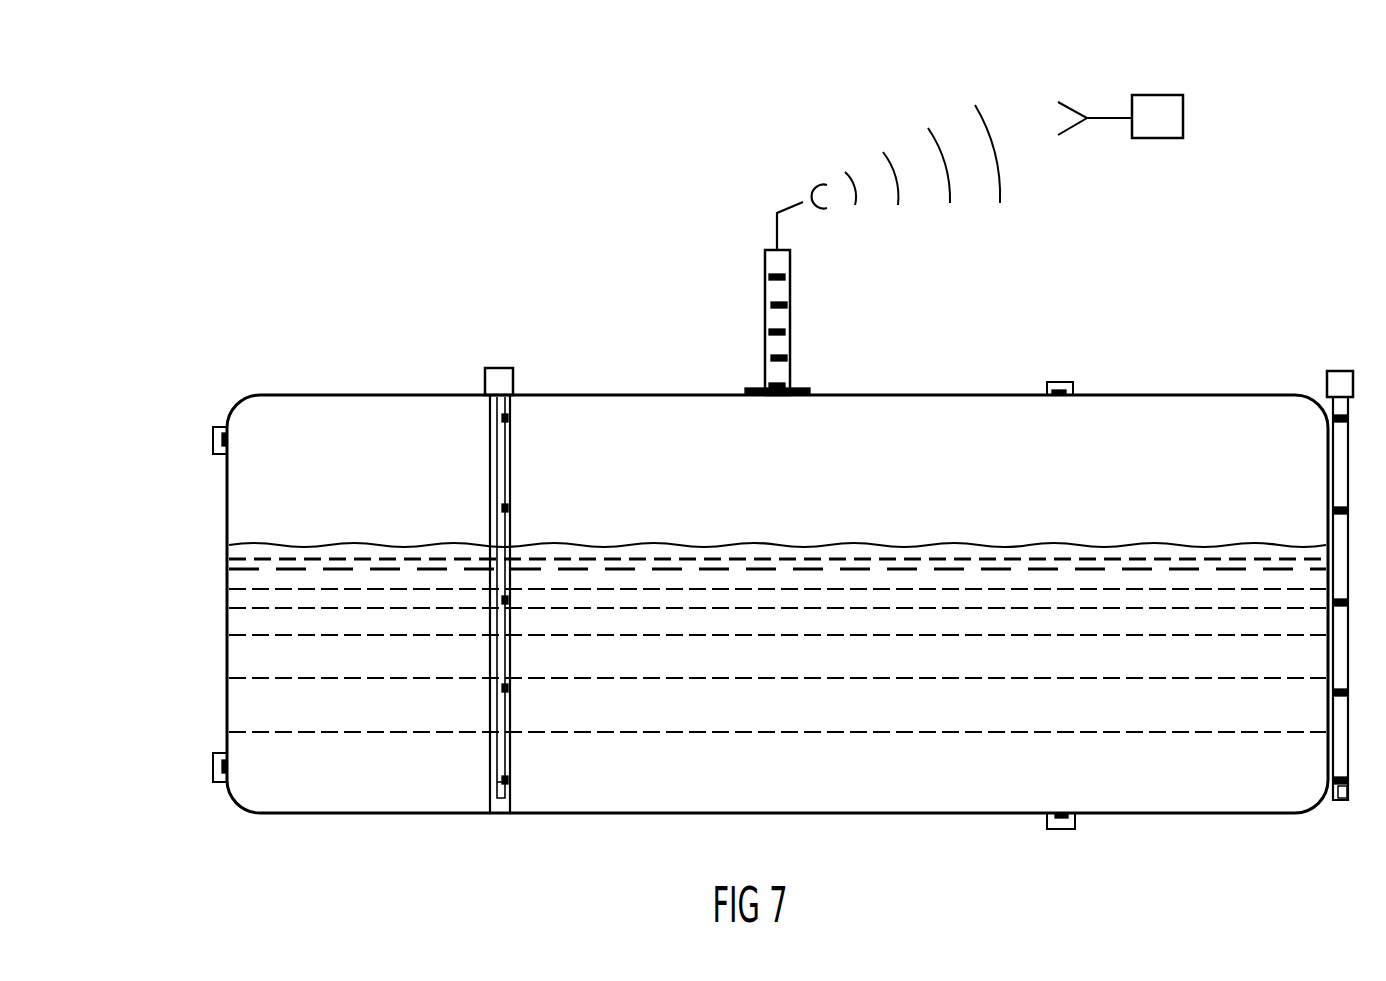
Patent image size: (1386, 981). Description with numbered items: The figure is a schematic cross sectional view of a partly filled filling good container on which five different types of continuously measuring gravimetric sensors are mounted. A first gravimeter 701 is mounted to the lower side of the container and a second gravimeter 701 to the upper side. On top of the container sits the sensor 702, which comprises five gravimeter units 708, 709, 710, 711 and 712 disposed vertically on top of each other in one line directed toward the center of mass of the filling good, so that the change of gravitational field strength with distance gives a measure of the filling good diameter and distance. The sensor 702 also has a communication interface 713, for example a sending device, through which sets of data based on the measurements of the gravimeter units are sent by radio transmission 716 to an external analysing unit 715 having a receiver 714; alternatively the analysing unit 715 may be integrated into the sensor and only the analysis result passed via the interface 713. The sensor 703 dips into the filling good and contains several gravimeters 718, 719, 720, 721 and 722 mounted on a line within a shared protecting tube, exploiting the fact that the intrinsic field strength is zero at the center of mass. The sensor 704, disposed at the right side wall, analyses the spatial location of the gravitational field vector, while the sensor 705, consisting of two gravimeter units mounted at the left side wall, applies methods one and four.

The gravimeter 701 is at (1060, 382).
The sensor 702 is at (781, 318).
The sensor 703 is at (497, 375).
The sensor 704 is at (1340, 370).
The sensor 705 is at (213, 437).
The gravimeter unit 708 is at (768, 277).
The gravimeter unit 709 is at (792, 305).
The gravimeter unit 710 is at (768, 332).
The gravimeter unit 711 is at (792, 358).
The gravimeter unit 712 is at (768, 388).
The communication interface 713 is at (797, 202).
The receiver 714 is at (1076, 137).
The analysing unit 715 is at (1155, 95).
The radio transmission 716 is at (978, 105).
The gravimeter 718 is at (500, 418).
The gravimeter 719 is at (500, 508).
The gravimeter 720 is at (500, 600).
The gravimeter 721 is at (500, 688).
The gravimeter 722 is at (500, 782).